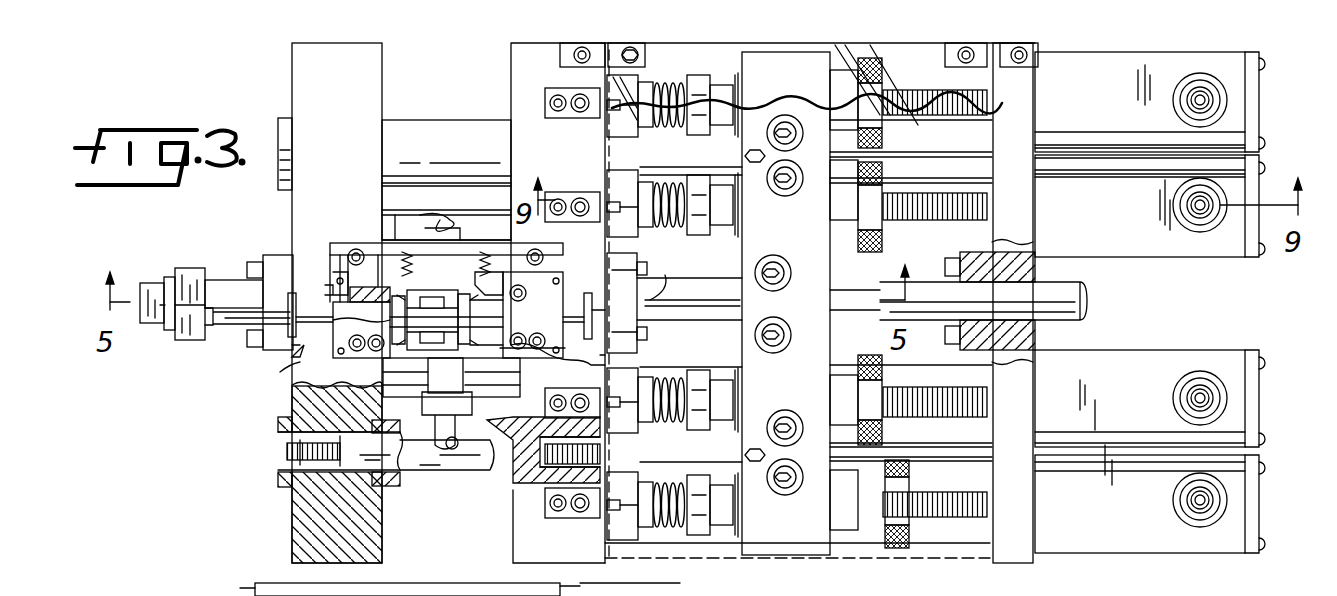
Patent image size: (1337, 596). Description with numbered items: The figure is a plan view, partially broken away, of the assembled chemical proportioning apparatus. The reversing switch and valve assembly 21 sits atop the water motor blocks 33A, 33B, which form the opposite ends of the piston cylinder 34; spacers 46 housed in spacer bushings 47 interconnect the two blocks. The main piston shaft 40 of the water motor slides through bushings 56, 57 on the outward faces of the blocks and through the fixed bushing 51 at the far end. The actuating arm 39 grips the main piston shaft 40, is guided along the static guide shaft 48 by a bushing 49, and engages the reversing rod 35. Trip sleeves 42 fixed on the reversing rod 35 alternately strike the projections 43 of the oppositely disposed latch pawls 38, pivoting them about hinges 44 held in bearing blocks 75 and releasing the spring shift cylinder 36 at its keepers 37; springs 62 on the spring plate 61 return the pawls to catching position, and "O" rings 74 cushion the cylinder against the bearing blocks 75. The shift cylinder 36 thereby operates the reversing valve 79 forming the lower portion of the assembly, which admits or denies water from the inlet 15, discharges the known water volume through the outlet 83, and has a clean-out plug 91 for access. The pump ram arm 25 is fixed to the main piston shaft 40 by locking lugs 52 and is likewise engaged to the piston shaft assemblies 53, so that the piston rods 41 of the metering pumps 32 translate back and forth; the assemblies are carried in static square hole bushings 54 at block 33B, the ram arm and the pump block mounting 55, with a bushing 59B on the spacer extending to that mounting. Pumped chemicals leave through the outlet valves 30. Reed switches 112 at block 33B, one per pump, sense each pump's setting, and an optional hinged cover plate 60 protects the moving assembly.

The inlet 15 is at (445, 442).
The reversing switch and valve assembly 21 is at (293, 343).
The pump ram arm 25 is at (788, 555).
The outlet valves 30 is at (1227, 104).
The metering pumps 32 is at (1235, 64).
The water motor block 33A is at (288, 515).
The water motor block 33B is at (520, 540).
The piston cylinder 34 is at (478, 195).
The reversing rod 35 is at (238, 330).
The spring shift cylinder 36 is at (503, 315).
The keepers 37 is at (412, 290).
The latch pawls 38 is at (375, 265).
The actuating arm 39 is at (200, 255).
The main piston shaft 40 is at (222, 285).
The piston rods 41 is at (930, 200).
The trip sleeves 42 is at (585, 342).
The projections 43 is at (328, 297).
The hinges 44 is at (341, 278).
The spacers 46 is at (400, 463).
The spacer bushings 47 is at (440, 128).
The static guide shaft 48 is at (147, 283).
The bushing 49 is at (168, 335).
The fixed bushing 51 is at (1045, 270).
The locking lugs 52 is at (798, 154).
The piston shaft assemblies 53 is at (675, 115).
The square hole bushings 54 is at (632, 140).
The pump block mounting 55 is at (1028, 564).
The bushing 56 is at (273, 260).
The bushing 57 is at (630, 292).
The bushing 59B is at (985, 130).
The hinged cover plate 60 is at (1005, 80).
The spring plate 61 is at (347, 245).
The springs 62 is at (412, 234).
The "O" rings 74 is at (480, 340).
The bearing blocks 75 is at (322, 363).
The reversing valve 79 is at (425, 584).
The outlet 83 is at (433, 216).
The clean-out plug 91 is at (600, 584).
The reed switches 112 is at (592, 122).